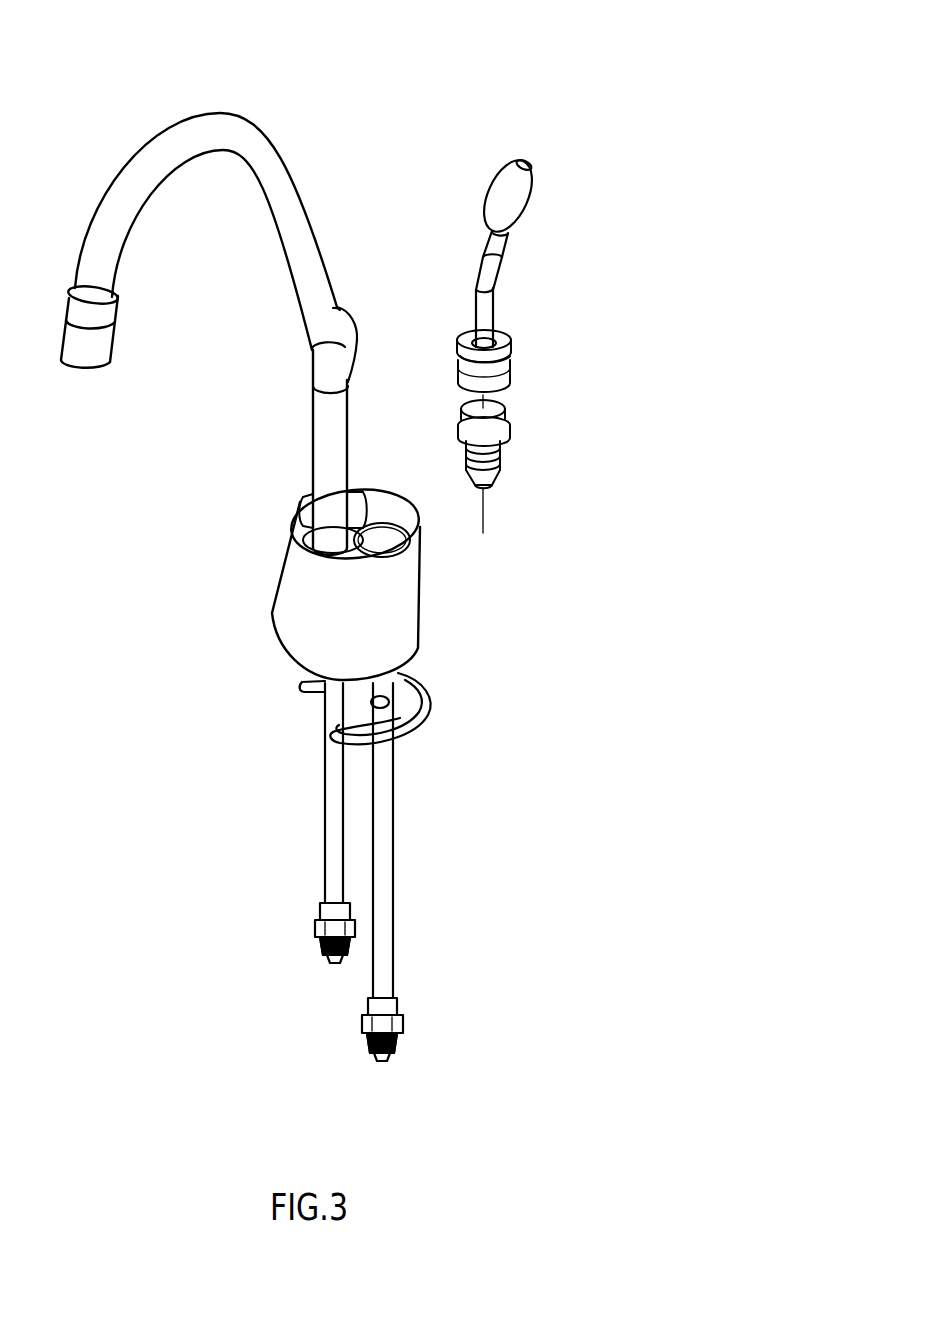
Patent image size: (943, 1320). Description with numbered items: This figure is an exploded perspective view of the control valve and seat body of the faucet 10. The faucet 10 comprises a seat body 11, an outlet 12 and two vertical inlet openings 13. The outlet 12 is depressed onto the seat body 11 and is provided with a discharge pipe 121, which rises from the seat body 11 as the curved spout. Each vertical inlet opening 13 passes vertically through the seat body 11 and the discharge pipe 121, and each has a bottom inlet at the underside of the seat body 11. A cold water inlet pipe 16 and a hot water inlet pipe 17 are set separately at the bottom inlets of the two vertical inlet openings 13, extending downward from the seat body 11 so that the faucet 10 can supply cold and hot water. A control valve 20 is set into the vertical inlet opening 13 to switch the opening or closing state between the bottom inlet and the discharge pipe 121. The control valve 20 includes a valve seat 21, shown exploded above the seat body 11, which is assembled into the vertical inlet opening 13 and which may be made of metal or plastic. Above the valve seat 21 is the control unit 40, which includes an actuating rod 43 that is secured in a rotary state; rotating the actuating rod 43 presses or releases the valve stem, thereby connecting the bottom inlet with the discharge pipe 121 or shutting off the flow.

The faucet 10 is at (508, 74).
The seat body 11 is at (418, 600).
The outlet 12 is at (302, 530).
The discharge pipe 121 is at (312, 463).
The vertical inlet opening 13 is at (482, 483).
The cold water inlet pipe 16 is at (393, 786).
The hot water inlet pipe 17 is at (325, 757).
The control valve 20 is at (541, 428).
The valve seat 21 is at (508, 428).
The control unit 40 is at (457, 247).
The actuating rod 43 is at (357, 323).